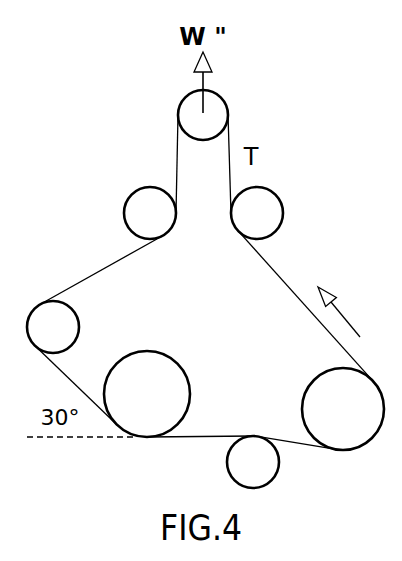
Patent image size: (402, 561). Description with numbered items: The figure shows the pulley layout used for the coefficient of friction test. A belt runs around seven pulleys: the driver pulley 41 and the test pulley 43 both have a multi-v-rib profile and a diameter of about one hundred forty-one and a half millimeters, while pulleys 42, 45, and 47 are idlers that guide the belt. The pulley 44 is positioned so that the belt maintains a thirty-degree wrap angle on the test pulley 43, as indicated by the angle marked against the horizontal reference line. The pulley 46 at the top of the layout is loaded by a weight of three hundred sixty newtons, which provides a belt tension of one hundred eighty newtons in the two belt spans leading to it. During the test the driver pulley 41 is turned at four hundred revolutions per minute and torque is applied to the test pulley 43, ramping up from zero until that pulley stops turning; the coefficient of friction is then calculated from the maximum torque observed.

The driver pulley 41 is at (328, 424).
The idler pulley 42 is at (239, 474).
The test pulley 43 is at (131, 410).
The pulley 44 is at (39, 338).
The idler pulley 45 is at (136, 226).
The pulley 46 is at (192, 116).
The idler pulley 47 is at (243, 226).